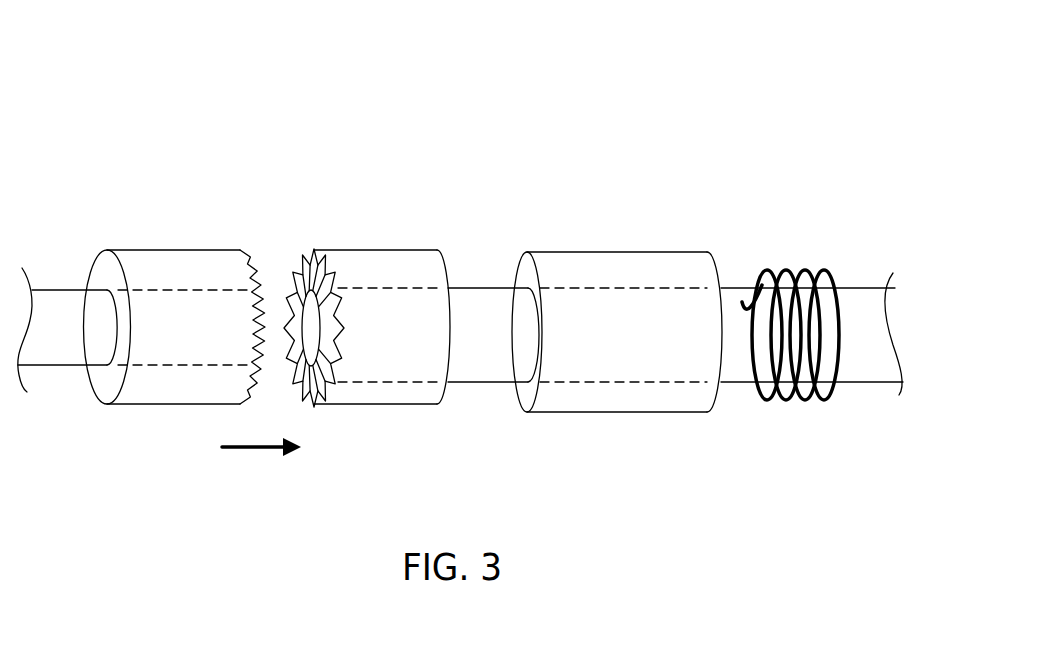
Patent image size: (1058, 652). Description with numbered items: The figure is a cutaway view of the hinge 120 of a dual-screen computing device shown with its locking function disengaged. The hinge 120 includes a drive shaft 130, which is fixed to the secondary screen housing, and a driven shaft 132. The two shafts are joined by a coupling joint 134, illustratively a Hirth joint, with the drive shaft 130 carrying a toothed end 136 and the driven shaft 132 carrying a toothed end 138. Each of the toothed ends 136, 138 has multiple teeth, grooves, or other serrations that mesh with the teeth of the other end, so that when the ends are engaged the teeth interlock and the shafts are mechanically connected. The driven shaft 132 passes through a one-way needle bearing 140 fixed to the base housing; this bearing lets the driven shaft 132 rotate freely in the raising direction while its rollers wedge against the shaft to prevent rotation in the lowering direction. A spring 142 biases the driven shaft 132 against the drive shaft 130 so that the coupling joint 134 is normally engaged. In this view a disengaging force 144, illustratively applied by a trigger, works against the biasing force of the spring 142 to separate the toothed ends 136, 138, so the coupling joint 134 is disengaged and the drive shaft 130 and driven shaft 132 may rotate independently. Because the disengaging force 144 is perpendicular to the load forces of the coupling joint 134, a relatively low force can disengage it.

The hinge 120 is at (893, 115).
The drive shaft 130 is at (57, 347).
The driven shaft 132 is at (855, 358).
The coupling joint 134 is at (233, 211).
The toothed end 136 is at (143, 263).
The toothed end 138 is at (363, 263).
The one-way needle bearing 140 is at (640, 272).
The spring 142 is at (742, 300).
The disengaging force 144 is at (260, 450).